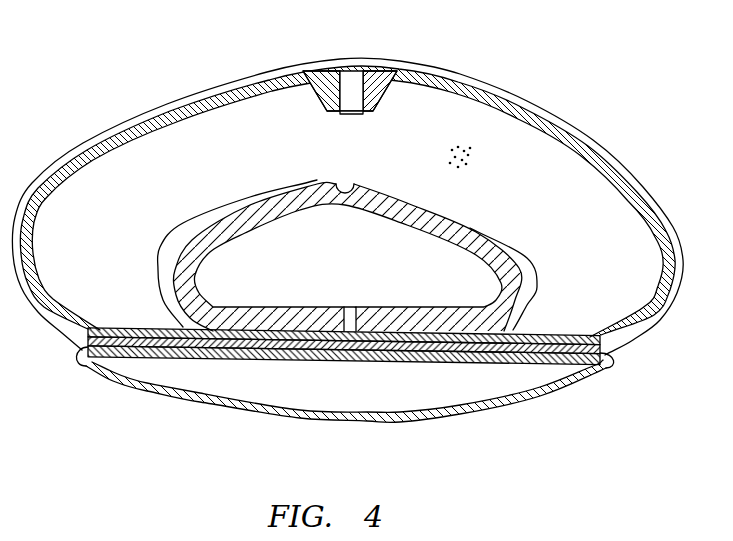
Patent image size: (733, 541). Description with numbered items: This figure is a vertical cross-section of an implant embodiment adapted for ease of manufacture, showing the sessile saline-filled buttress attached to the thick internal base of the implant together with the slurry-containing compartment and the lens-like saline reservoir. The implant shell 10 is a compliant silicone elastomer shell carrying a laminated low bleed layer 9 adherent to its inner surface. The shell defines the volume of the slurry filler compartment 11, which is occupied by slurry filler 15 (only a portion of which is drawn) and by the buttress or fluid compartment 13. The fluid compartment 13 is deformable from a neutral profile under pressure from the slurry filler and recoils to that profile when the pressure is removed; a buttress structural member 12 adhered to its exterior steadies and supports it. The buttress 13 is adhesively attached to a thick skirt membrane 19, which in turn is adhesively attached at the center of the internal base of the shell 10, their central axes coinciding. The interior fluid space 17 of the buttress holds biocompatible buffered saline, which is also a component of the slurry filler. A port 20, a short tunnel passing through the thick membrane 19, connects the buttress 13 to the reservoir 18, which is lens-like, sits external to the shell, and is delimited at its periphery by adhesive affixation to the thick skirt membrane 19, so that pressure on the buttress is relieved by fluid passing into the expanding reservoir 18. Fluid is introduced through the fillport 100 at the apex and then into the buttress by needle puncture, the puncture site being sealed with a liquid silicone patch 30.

The fillport 100 is at (322, 54).
The slurry filler 15 is at (467, 150).
The slurry filler compartment 11 is at (553, 162).
The shell 10 is at (600, 150).
The low bleed layer 9 is at (667, 207).
The liquid silicone patch 30 is at (344, 182).
The fluid compartment 13 is at (251, 206).
The buttress structural member 12 is at (183, 231).
The thick skirt membrane 19 is at (127, 329).
The reservoir 18 is at (203, 407).
The fluid space 17 is at (272, 388).
The port 20 is at (347, 328).